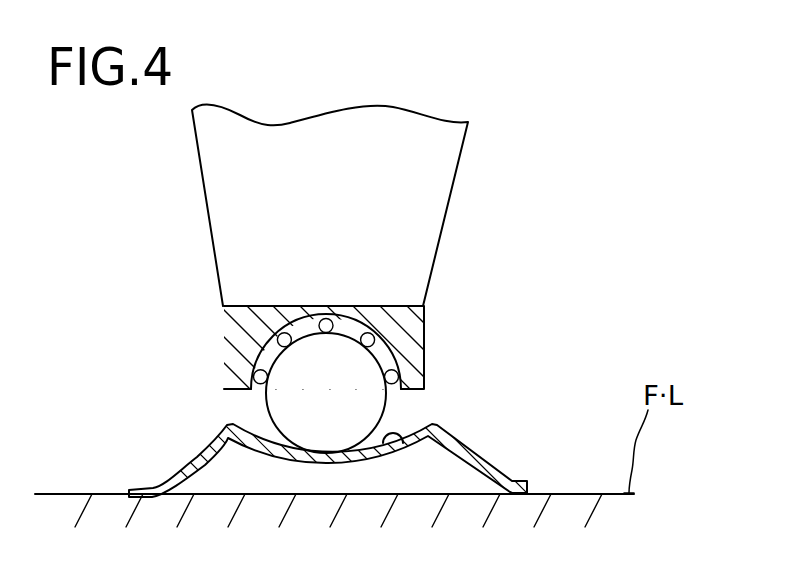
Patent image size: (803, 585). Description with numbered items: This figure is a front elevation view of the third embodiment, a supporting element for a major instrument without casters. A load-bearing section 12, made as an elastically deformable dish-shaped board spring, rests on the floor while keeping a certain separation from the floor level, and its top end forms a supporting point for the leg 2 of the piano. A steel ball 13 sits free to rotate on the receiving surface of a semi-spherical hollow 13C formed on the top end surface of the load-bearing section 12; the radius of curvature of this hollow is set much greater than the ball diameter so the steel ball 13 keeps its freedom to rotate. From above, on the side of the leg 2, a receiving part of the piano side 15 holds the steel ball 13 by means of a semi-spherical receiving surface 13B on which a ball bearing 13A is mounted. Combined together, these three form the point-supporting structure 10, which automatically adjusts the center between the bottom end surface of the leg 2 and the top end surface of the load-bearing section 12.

The leg 2 is at (413, 212).
The point-supporting structure 10 is at (618, 378).
The load-bearing section 12 is at (462, 446).
The steel ball 13 is at (352, 392).
The ball bearing 13A is at (372, 333).
The semi-spherical receiving surface 13B is at (394, 352).
The semi-spherical hollow 13C is at (405, 438).
The receiving part of the piano side 15 is at (243, 350).